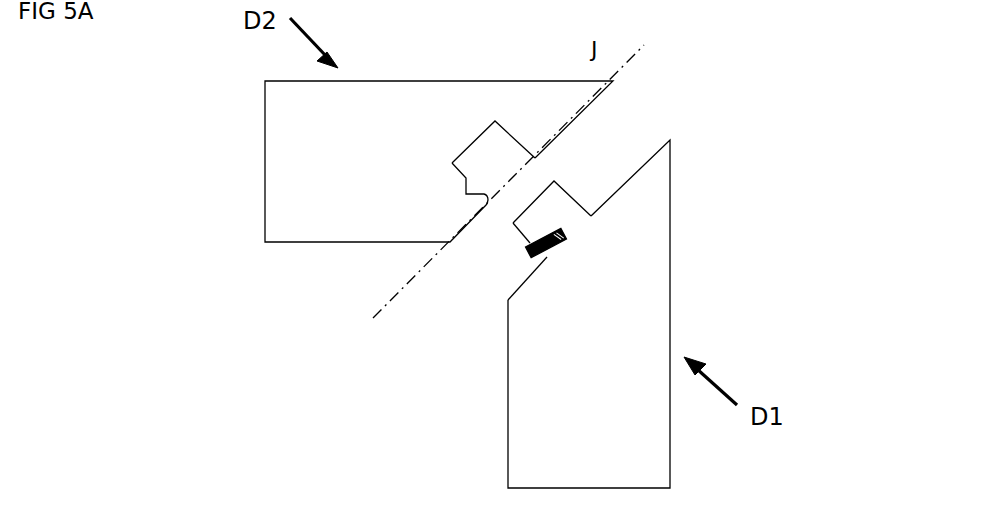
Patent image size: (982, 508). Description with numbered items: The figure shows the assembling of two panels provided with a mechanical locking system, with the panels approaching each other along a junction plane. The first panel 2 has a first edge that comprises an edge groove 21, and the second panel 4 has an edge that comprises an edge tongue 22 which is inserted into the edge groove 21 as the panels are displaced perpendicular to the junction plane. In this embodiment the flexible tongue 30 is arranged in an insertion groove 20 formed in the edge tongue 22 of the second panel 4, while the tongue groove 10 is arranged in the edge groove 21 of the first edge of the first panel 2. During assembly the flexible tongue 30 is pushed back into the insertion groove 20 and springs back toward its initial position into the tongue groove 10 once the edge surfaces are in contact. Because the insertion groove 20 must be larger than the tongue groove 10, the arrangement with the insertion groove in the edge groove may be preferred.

The first panel 2 is at (527, 385).
The second panel 4 is at (335, 222).
The tongue groove 10 is at (465, 190).
The insertion groove 20 is at (567, 237).
The edge groove 21 is at (481, 148).
The edge tongue 22 is at (565, 207).
The flexible tongue 30 is at (528, 247).